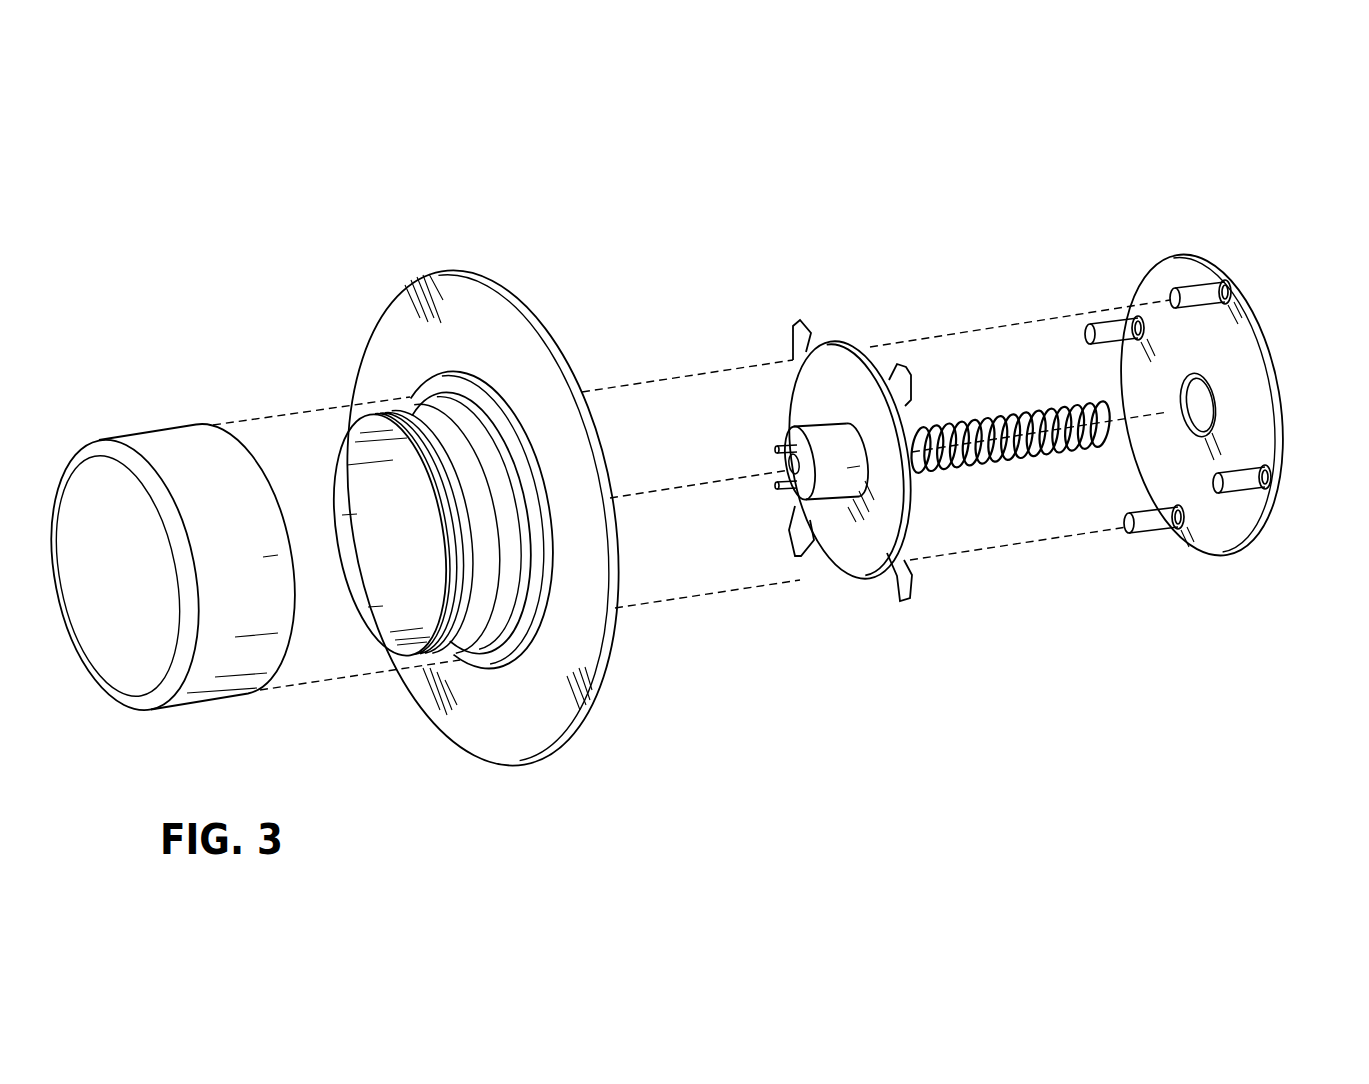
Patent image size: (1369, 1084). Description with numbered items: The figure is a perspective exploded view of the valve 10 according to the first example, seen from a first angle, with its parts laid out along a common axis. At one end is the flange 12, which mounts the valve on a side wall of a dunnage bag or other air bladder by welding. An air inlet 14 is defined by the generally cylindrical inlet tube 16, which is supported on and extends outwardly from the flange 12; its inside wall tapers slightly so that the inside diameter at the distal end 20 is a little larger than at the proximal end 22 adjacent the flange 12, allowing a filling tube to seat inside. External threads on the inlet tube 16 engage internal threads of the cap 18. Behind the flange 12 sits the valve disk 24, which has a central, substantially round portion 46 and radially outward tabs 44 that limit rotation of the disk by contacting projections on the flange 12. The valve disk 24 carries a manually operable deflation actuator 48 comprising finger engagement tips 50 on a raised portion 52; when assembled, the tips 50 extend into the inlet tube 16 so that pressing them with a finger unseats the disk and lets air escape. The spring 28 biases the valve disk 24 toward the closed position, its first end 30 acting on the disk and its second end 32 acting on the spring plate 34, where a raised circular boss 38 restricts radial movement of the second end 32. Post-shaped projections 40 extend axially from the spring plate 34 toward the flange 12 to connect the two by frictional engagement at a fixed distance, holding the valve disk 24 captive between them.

The valve 10 is at (248, 266).
The flange 12 is at (465, 293).
The air inlet 14 is at (368, 567).
The inlet tube 16 is at (460, 643).
The cap 18 is at (155, 432).
The distal end 20 is at (337, 488).
The proximal end 22 is at (530, 597).
The valve disk 24 is at (843, 350).
The spring 28 is at (1015, 463).
The first end 30 is at (926, 435).
The second end 32 is at (1106, 449).
The spring plate 34 is at (1253, 373).
The raised circular boss 38 is at (1180, 400).
The projections 40 is at (1195, 292).
The tabs 44 is at (791, 325).
The central portion 46 is at (852, 558).
The deflation actuator 48 is at (829, 522).
The finger engagement tips 50 is at (790, 468).
The raised portion 52 is at (820, 426).